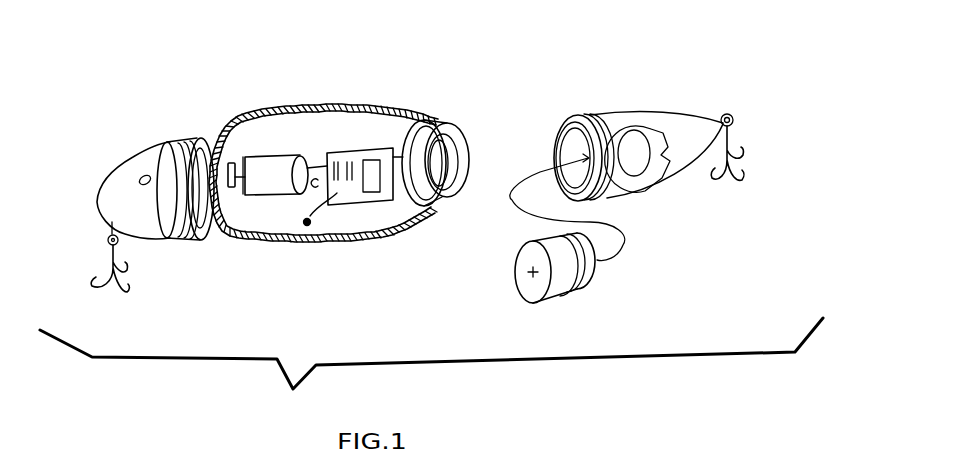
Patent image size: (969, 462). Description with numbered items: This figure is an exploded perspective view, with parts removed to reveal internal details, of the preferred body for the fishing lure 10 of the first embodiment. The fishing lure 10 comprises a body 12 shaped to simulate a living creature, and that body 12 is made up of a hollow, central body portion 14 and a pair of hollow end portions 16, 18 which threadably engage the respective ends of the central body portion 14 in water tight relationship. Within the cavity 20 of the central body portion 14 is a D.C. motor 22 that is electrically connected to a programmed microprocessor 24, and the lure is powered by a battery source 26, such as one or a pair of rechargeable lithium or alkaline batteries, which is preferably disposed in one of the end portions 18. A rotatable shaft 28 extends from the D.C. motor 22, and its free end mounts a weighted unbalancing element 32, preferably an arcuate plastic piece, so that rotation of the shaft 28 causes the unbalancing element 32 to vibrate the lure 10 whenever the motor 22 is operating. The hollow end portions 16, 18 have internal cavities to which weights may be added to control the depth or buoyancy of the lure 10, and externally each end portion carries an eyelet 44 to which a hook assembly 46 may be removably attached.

The fishing lure 10 is at (431, 368).
The body 12 is at (282, 108).
The central body portion 14 is at (350, 238).
The hollow end portion 16 is at (135, 157).
The hollow end portion 18 is at (635, 117).
The cavity 20 is at (268, 213).
The D.C. motor 22 is at (278, 162).
The programmed microprocessor 24 is at (372, 152).
The battery source 26 is at (597, 270).
The rotatable shaft 28 is at (243, 156).
The unbalancing element 32 is at (232, 188).
The eyelet 44 is at (108, 238).
The hook assembly 46 is at (103, 298).